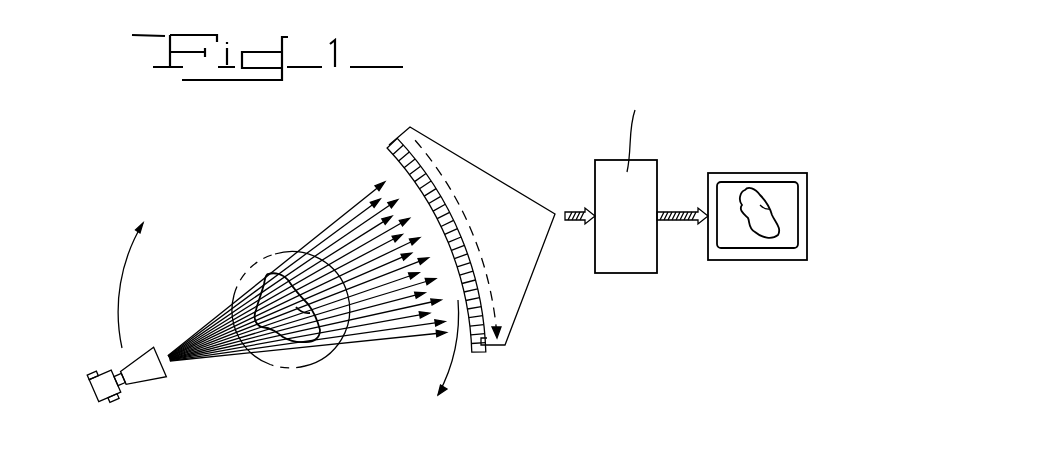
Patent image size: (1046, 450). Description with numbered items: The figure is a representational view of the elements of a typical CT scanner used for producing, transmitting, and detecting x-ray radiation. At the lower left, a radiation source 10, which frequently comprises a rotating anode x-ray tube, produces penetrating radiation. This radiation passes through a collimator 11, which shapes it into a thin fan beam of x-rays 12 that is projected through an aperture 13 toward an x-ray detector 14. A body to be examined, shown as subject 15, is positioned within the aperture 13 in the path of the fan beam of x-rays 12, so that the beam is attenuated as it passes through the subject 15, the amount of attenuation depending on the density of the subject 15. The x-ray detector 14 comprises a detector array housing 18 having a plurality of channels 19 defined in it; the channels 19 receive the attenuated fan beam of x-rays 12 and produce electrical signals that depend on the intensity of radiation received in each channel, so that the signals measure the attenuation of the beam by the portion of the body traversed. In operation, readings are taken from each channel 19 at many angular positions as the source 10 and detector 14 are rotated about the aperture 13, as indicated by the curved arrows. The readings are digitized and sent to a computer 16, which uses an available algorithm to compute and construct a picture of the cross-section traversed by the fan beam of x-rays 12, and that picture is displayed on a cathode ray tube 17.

The radiation source 10 is at (113, 393).
The collimator 11 is at (157, 386).
The fan beam of x-rays 12 is at (214, 362).
The aperture 13 is at (232, 297).
The x-ray detector 14 is at (384, 132).
The subject 15 is at (266, 275).
The computer 16 is at (610, 167).
The cathode ray tube 17 is at (730, 187).
The detector array housing 18 is at (448, 157).
The channels 19 is at (444, 213).